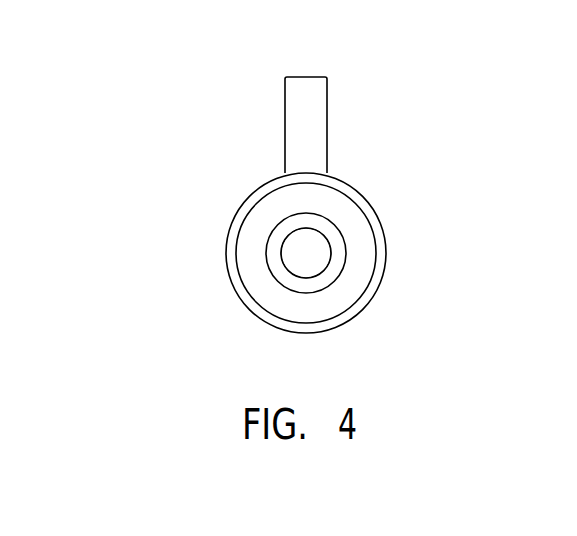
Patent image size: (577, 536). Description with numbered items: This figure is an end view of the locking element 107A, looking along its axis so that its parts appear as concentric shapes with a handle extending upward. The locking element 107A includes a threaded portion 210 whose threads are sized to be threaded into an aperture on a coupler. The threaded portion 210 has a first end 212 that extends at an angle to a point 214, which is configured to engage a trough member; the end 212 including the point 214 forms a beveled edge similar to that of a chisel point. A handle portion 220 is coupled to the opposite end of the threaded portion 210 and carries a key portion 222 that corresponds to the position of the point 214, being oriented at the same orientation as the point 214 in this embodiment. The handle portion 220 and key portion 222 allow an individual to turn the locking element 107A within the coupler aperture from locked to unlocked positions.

The locking element 107A is at (192, 117).
The key portion 222 is at (315, 107).
The handle portion 220 is at (243, 207).
The point 214 is at (305, 228).
The first end 212 is at (310, 257).
The threaded portion 210 is at (285, 268).